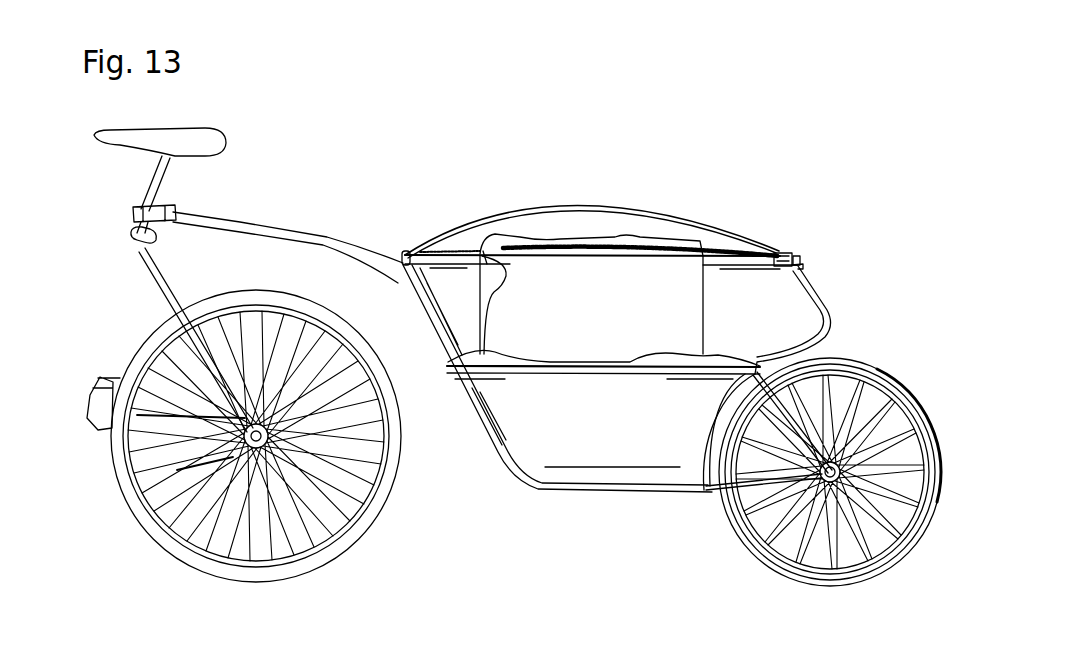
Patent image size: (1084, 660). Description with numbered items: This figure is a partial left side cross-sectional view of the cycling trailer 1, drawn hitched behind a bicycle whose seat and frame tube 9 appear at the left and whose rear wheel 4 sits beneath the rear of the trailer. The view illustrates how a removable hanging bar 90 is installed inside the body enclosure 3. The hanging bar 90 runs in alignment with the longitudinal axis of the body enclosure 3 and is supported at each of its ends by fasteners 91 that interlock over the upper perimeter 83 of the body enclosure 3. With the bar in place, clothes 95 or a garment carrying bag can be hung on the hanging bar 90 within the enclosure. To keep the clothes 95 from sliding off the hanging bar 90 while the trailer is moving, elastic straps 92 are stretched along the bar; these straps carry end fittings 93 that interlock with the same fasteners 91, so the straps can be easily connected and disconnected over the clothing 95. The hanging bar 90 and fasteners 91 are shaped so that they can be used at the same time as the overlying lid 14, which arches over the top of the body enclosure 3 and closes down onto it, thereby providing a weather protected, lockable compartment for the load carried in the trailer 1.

The cycling trailer 1 is at (705, 144).
The body enclosure 3 is at (828, 309).
The rear wheel 4 is at (863, 367).
The handlebar / steering tube 9 is at (322, 236).
The overlying lid 14 is at (625, 220).
The upper perimeter 83 is at (799, 263).
The hanging bar 90 is at (487, 260).
The fasteners 91 is at (418, 251).
The elastic straps 92 is at (737, 249).
The end fittings 93 is at (781, 253).
The clothes 95 is at (598, 318).